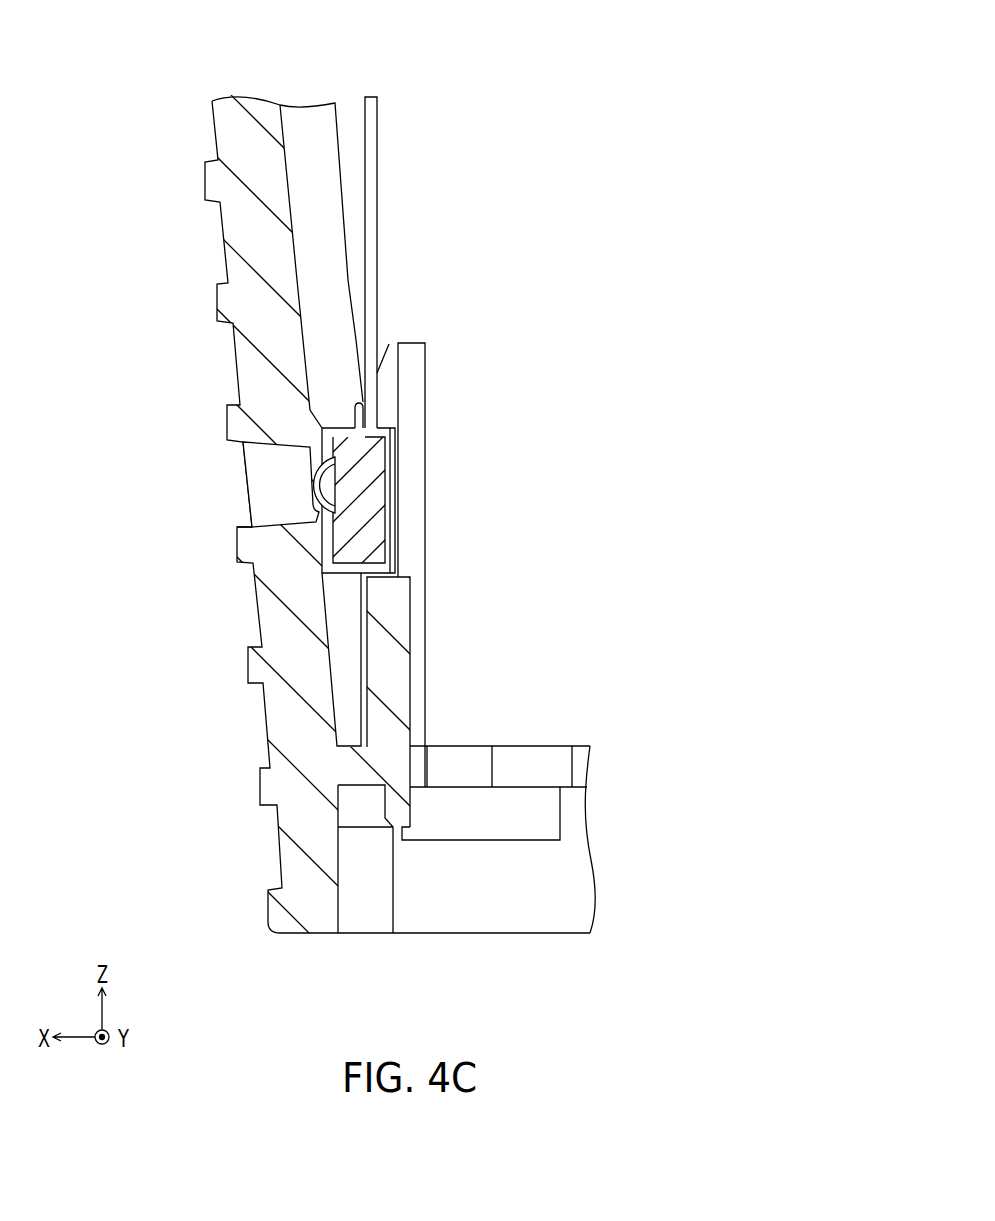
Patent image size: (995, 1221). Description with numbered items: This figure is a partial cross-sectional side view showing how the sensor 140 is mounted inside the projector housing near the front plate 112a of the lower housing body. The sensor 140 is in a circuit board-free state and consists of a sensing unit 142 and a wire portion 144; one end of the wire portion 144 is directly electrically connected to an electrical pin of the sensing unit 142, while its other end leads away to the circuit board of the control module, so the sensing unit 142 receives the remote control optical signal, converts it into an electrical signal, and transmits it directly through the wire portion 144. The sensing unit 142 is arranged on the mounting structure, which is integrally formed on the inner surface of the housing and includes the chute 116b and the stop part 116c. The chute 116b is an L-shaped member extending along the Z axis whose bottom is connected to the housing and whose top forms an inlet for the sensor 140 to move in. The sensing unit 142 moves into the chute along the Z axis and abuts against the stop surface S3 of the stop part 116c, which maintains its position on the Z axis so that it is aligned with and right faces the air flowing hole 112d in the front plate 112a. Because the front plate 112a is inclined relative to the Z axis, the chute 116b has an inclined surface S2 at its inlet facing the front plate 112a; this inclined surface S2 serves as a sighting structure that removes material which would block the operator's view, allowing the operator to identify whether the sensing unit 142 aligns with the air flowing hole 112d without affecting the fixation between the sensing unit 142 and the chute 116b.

The front plate 112a is at (248, 243).
The air flowing hole 112d is at (267, 483).
The sensor 140 is at (438, 291).
The sensing unit 142 is at (352, 491).
The wire portion 144 is at (377, 197).
The chute 116b is at (425, 368).
The stop part 116c is at (388, 676).
The inclined surface S2 is at (394, 345).
The stop surface S3 is at (413, 566).